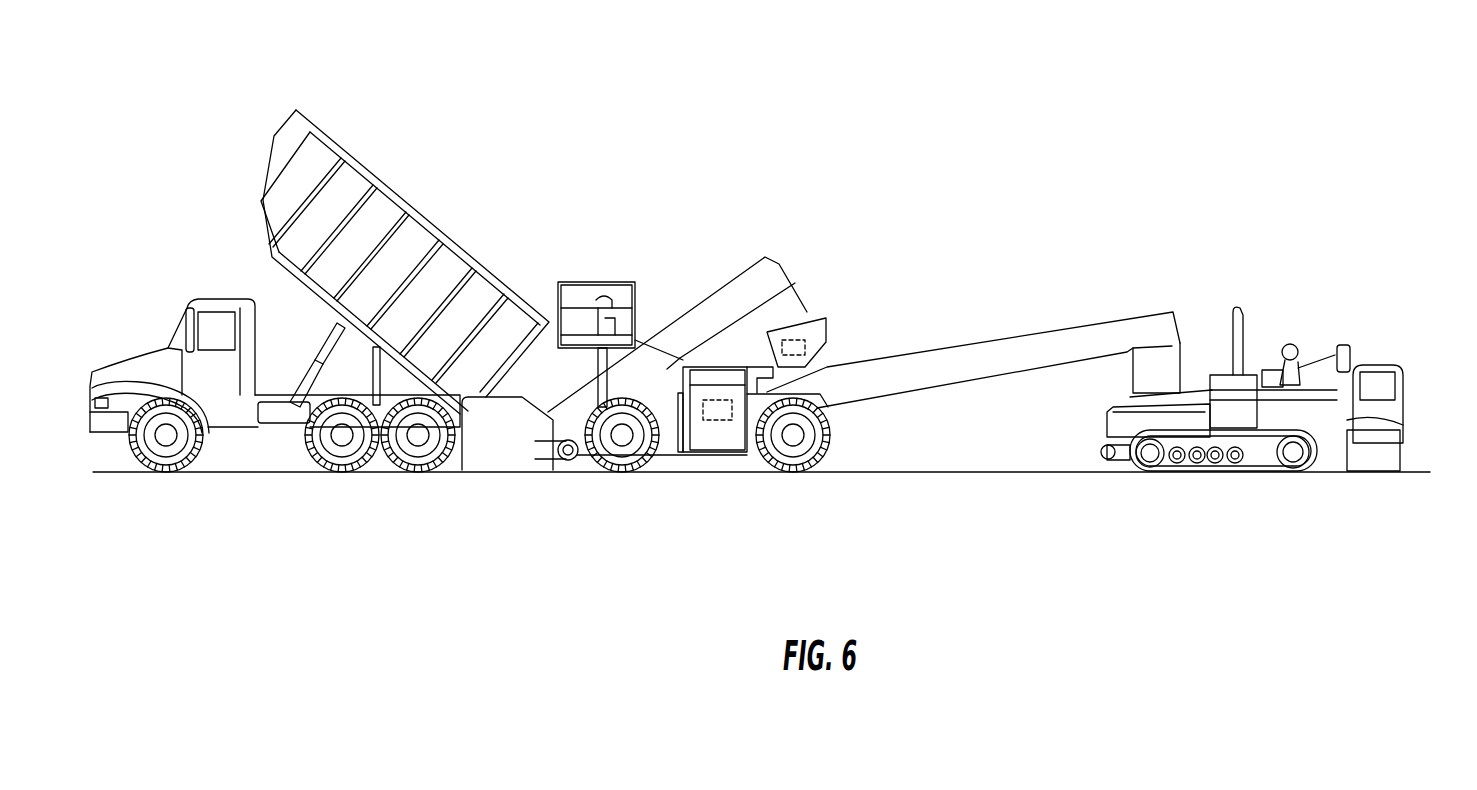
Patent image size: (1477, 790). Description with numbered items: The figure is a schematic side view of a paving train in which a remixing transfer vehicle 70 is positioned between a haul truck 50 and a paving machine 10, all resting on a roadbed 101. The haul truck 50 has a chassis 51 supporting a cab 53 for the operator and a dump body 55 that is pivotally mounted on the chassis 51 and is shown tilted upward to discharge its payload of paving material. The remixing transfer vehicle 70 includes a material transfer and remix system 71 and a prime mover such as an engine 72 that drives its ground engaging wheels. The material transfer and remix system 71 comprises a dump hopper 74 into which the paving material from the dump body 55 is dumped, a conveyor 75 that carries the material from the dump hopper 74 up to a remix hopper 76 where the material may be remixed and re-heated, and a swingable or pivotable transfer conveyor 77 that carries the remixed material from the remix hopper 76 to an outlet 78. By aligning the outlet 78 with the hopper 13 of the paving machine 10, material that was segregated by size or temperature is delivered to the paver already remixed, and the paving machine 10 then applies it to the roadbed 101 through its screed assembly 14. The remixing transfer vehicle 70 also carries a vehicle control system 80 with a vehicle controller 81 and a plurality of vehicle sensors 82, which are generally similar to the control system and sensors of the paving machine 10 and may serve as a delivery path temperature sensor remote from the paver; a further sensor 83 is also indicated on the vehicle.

The paving machine 10 is at (1345, 222).
The hopper 13 is at (1175, 425).
The screed assembly 14 is at (1398, 452).
The haul truck 50 is at (185, 168).
The chassis 51 is at (294, 418).
The cab 53 is at (215, 297).
The dump body 55 is at (357, 187).
The remixing transfer vehicle 70 is at (698, 172).
The material transfer and remix system 71 is at (648, 262).
The engine 72 is at (702, 456).
The dump hopper 74 is at (503, 443).
The conveyor 75 is at (695, 320).
The remix hopper 76 is at (815, 333).
The pivotable transfer conveyor 77 is at (950, 370).
The outlet 78 is at (1168, 362).
The vehicle control system 80 is at (791, 195).
The vehicle controller 81 is at (725, 420).
The vehicle sensors 82 is at (846, 178).
The sensor 83 is at (805, 347).
The roadbed 101 is at (953, 472).